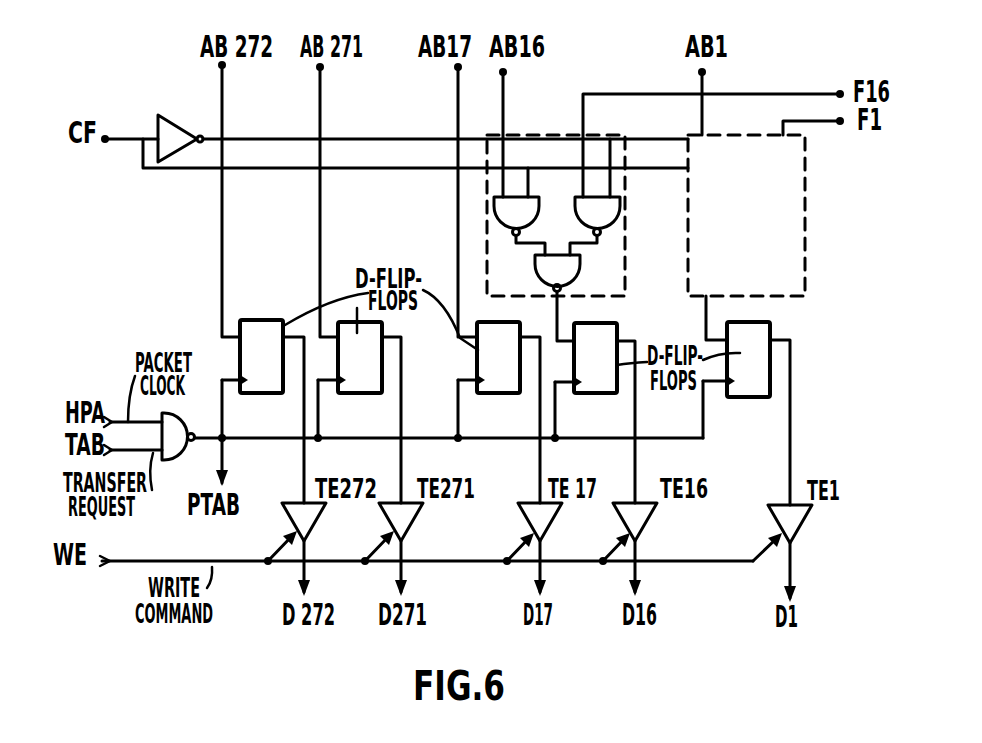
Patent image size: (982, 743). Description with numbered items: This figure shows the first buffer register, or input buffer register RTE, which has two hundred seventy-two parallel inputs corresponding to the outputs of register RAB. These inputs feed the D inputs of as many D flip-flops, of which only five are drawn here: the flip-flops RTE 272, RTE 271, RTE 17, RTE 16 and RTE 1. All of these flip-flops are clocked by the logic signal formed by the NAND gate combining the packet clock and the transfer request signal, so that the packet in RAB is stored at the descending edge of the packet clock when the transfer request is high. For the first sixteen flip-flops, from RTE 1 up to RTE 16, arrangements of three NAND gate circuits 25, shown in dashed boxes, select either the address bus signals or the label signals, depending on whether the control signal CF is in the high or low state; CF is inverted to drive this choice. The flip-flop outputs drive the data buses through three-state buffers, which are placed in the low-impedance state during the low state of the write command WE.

The NAND gate circuits 25 is at (613, 250).
The D flip-flop RTE 272 is at (262, 338).
The D flip-flop RTE 271 is at (370, 388).
The D flip-flop RTE 17 is at (498, 380).
The D flip-flop RTE 16 is at (598, 338).
The D flip-flop RTE 1 is at (758, 335).